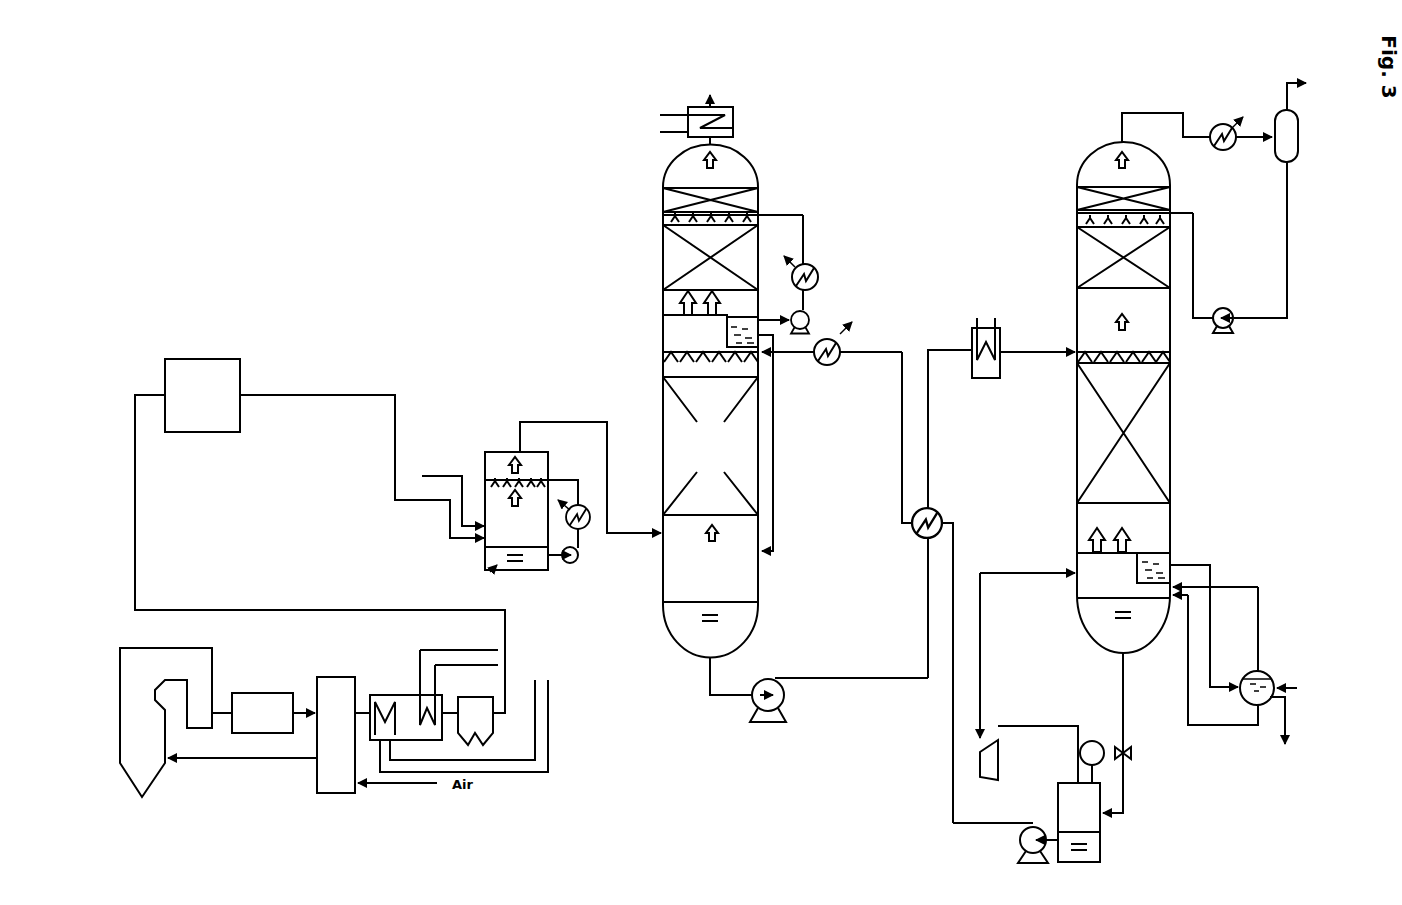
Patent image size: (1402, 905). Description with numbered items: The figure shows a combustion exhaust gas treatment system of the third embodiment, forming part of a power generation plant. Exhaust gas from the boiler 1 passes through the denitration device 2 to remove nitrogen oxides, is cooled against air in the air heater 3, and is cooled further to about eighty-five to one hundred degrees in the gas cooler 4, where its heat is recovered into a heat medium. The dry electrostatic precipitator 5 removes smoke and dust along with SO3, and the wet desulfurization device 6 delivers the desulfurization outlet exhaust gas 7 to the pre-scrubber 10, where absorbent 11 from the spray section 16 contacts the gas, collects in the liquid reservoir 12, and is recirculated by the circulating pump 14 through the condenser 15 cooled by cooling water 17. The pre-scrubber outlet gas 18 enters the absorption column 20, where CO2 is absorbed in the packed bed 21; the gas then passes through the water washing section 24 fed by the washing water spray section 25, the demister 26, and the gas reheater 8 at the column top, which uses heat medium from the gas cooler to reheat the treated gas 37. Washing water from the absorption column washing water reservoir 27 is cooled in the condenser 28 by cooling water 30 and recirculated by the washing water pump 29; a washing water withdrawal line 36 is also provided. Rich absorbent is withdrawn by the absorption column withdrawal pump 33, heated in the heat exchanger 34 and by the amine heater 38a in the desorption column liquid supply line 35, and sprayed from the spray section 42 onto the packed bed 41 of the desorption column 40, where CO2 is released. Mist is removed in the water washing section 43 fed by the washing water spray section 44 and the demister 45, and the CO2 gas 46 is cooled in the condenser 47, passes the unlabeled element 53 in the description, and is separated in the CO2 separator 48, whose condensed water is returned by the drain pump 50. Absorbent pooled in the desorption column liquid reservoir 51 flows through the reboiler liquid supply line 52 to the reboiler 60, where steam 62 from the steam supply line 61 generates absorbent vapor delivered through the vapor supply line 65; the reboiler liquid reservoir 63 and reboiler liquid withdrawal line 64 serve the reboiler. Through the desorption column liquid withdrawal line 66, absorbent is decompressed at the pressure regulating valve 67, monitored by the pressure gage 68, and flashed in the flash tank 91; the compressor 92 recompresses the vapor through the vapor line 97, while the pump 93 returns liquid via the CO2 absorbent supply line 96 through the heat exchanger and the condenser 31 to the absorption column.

The boiler 1 is at (208, 659).
The denitration device 2 is at (275, 689).
The air heater 3 is at (348, 686).
The gas cooler 4 is at (396, 701).
The dry electrostatic precipitator 5 is at (470, 704).
The wet desulfurization device 6 is at (200, 366).
The desulfurization outlet exhaust gas 7 is at (291, 397).
The gas reheater 8 is at (708, 120).
The pre-scrubber 10 is at (496, 461).
The absorbent 11 is at (436, 476).
The liquid reservoir 12 is at (495, 570).
The circulating pump 14 is at (573, 563).
The condenser 15 is at (560, 514).
The spray section 16 is at (531, 484).
The cooling water 17 is at (588, 530).
The pre-scrubber outlet gas 18 is at (610, 453).
The absorption column 20 is at (750, 590).
The packed bed 21 is at (710, 446).
The water washing section 24 is at (670, 260).
The washing water spray section 25 is at (668, 221).
The demister 26 is at (668, 198).
The absorption column washing water reservoir 27 is at (738, 318).
The condenser 28 is at (820, 272).
The washing water pump 29 is at (812, 325).
The cooling water 30 is at (811, 314).
The condenser 31 is at (842, 358).
The absorption column withdrawal pump 33 is at (786, 700).
The heat exchanger (E) 34 is at (916, 539).
The desorption column liquid supply line 35 is at (1050, 350).
The washing water withdrawal line 36 is at (778, 522).
The treated gas 37 is at (717, 155).
The amine heater 38a is at (988, 380).
The desorption column 40 is at (1170, 533).
The packed bed 41 is at (1165, 436).
The spray section 42 is at (1170, 356).
The water washing section 43 is at (1084, 259).
The washing water spray section 44 is at (1084, 222).
The demister 45 is at (1084, 202).
The CO2 gas 46 is at (1110, 160).
The condenser 47 is at (1223, 127).
The CO2 separator 48 is at (1296, 132).
The drain pump 50 is at (1234, 333).
The desorption column liquid reservoir 51 is at (1172, 556).
The reboiler liquid supply line 52 is at (1212, 640).
The condenser 53 is at (1235, 147).
The reboiler 60 is at (1267, 670).
The steam supply line 61 is at (1285, 682).
The steam 62 is at (1301, 688).
The reboiler liquid reservoir 63 is at (1262, 706).
The reboiler liquid withdrawal line 64 is at (1220, 726).
The vapor supply line 65 is at (1263, 603).
The desorption column liquid withdrawal line 66 is at (1128, 670).
The pressure regulating valve 67 is at (1133, 756).
The pressure gage 68 is at (1090, 740).
The flash tank 91 is at (1105, 843).
The compressor 92 is at (1000, 765).
The pump 93 is at (1020, 843).
The CO2 absorbent supply line 96 is at (946, 778).
The vapor line 97 is at (983, 661).